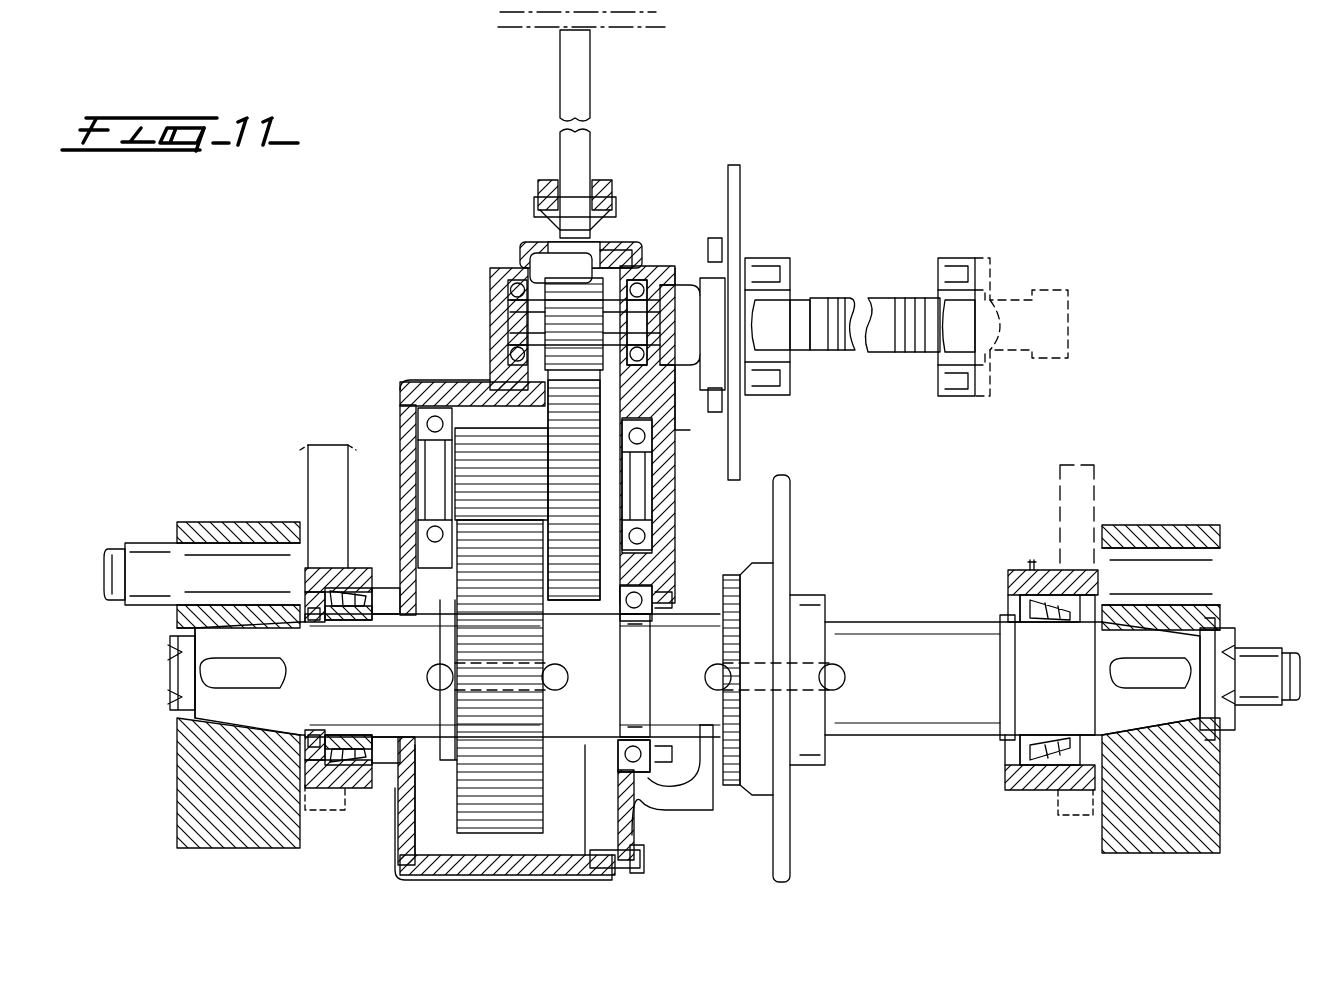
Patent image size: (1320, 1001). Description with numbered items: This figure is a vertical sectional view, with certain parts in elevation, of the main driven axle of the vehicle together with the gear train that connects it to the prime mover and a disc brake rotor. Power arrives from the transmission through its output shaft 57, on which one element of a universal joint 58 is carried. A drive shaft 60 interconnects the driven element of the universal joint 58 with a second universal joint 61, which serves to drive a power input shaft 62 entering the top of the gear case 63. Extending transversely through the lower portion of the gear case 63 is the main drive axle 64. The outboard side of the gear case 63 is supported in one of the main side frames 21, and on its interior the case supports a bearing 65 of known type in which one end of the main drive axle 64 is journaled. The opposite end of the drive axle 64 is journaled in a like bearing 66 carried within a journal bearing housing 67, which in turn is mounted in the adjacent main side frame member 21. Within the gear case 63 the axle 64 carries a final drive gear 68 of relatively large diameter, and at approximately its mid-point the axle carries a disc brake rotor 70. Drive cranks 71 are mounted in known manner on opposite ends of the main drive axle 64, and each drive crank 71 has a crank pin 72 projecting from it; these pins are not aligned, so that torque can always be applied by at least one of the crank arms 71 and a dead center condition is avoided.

The main side frame 21 is at (305, 490).
The output shaft 57 is at (1045, 286).
The universal joint 58 is at (962, 258).
The drive shaft 60 is at (841, 298).
The second universal joint 61 is at (757, 252).
The power input shaft 62 is at (651, 302).
The gear case 63 is at (490, 326).
The main drive axle 64 is at (893, 622).
The bearing 65 is at (348, 590).
The bearing 66 is at (1036, 575).
The journal bearing housing 67 is at (1008, 583).
The final drive gear 68 is at (513, 835).
The disc brake rotor 70 is at (790, 850).
The drive crank 71 is at (177, 800).
The crank pin 72 is at (138, 543).